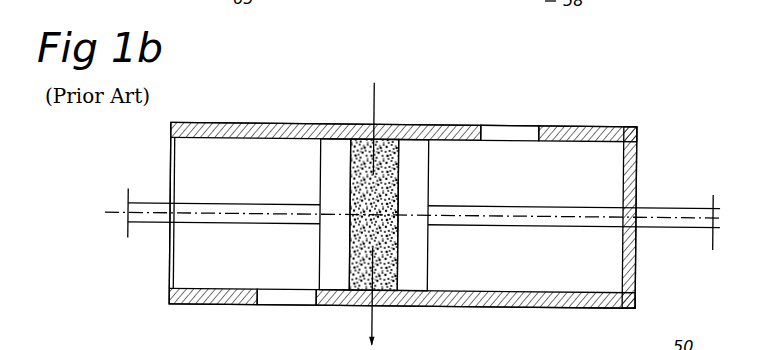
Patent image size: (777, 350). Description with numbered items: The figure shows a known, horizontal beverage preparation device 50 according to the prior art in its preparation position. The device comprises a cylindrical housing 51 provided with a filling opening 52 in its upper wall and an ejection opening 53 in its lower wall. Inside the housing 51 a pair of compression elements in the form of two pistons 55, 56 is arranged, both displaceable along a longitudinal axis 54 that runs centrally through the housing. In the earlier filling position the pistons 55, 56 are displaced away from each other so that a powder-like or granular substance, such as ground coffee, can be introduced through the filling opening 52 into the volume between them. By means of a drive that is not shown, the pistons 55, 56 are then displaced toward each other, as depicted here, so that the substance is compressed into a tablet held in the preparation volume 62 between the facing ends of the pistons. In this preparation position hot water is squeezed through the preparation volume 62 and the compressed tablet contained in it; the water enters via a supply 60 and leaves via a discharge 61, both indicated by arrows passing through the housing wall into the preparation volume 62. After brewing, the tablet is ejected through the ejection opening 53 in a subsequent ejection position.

The beverage preparation device 50 is at (612, 103).
The housing 51 is at (302, 134).
The filling opening 52 is at (507, 134).
The ejection opening 53 is at (272, 297).
The longitudinal axis 54 is at (110, 212).
The piston 55 is at (155, 212).
The piston 56 is at (666, 214).
The water supply 60 is at (375, 98).
The water discharge 61 is at (368, 313).
The preparation volume 62 is at (388, 288).